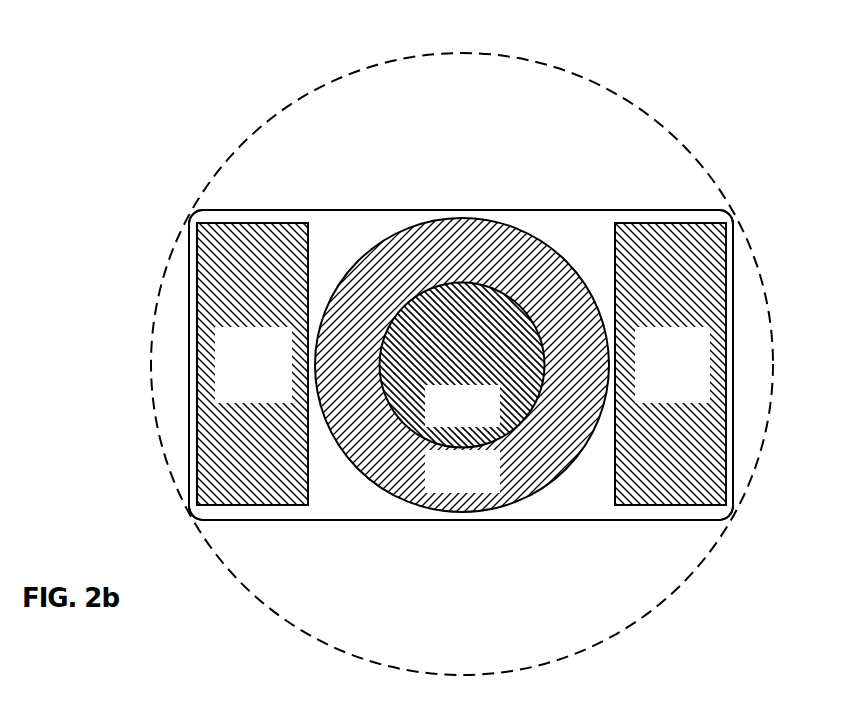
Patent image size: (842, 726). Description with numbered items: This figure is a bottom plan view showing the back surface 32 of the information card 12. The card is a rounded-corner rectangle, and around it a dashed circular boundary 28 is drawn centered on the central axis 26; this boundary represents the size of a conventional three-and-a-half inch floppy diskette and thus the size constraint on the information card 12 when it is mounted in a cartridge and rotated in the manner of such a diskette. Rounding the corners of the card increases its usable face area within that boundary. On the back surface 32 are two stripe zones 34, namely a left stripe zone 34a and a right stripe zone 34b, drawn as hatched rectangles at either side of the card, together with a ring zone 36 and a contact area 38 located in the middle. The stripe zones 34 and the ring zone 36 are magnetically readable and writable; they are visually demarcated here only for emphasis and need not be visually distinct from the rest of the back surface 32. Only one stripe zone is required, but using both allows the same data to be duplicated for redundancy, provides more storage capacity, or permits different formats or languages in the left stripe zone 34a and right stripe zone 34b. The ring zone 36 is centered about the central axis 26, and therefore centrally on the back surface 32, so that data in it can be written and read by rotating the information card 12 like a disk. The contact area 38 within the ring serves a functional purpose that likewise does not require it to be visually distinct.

The information card 12 is at (461, 210).
The central axis 26 is at (460, 358).
The circular boundary 28 is at (579, 72).
The back surface 32 is at (592, 240).
The stripe zones 34 is at (461, 364).
The left stripe zone 34a is at (270, 361).
The right stripe zone 34b is at (690, 361).
The ring zone 36 is at (477, 487).
The contact area 38 is at (477, 417).